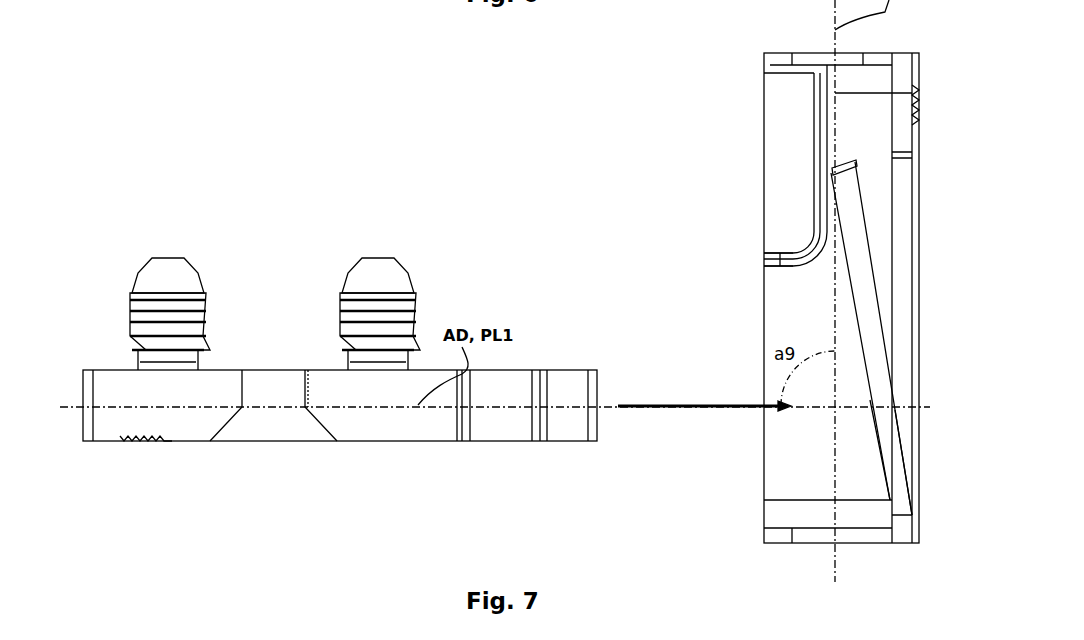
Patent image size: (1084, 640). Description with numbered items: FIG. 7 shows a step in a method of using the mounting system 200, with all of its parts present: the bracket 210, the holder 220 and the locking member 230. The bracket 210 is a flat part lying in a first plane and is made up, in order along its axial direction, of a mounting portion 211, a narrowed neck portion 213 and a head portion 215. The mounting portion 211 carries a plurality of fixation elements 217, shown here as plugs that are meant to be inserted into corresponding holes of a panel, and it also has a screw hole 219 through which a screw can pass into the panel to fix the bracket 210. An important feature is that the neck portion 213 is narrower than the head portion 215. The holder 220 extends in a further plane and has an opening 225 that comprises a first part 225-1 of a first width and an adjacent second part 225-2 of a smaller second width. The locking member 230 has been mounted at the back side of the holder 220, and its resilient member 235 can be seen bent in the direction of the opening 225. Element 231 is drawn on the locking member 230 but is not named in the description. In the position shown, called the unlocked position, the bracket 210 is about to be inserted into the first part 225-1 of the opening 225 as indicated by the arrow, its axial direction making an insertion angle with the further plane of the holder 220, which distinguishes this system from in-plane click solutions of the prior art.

The mounting system 200 is at (608, 158).
The bracket 210 is at (182, 230).
The mounting portion 211 is at (390, 410).
The neck portion 213 is at (503, 413).
The head portion 215 is at (572, 415).
The fixation elements 217 is at (368, 283).
The screw hole 219 is at (265, 419).
The holder 220 is at (729, 277).
The locking member 230 is at (734, 165).
The opening 225 is at (635, 222).
The second part 225-2 is at (728, 241).
The first part 225-1 is at (728, 307).
The latch arm 231 is at (902, 243).
The resilient member 235 is at (888, 370).